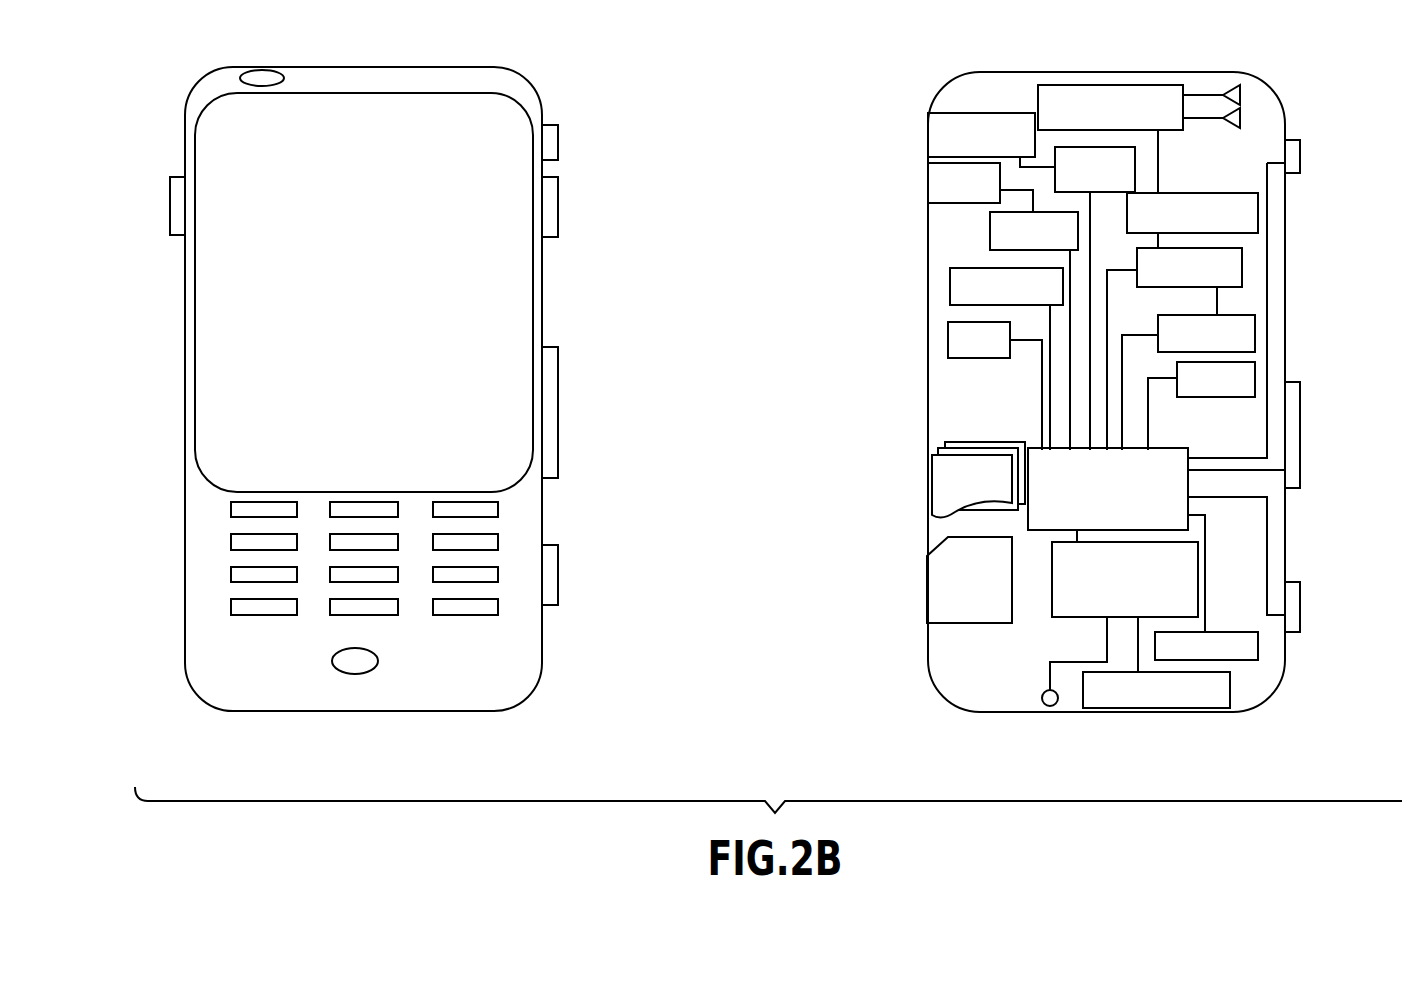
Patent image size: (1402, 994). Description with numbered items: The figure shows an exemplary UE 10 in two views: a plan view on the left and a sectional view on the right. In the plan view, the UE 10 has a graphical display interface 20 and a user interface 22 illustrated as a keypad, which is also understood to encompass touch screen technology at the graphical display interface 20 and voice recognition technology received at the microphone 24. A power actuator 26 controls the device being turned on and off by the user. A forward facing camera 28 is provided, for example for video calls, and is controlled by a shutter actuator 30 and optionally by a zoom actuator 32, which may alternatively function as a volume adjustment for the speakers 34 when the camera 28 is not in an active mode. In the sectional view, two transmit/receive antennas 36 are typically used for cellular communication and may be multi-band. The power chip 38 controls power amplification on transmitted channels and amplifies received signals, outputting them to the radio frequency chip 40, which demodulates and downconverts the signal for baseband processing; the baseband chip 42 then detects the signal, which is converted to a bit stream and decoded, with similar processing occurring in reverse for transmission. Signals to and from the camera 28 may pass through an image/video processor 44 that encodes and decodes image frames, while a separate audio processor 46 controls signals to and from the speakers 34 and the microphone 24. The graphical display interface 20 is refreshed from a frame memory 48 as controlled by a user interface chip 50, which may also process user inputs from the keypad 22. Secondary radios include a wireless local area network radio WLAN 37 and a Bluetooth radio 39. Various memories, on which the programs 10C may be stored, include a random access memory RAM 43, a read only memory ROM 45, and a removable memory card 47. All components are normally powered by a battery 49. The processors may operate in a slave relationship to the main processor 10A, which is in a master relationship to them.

The UE 10 is at (540, 755).
The main processor 10A is at (1038, 450).
The programs 10C is at (938, 492).
The graphical display interface 20 is at (220, 307).
The user interface 22 is at (217, 622).
The microphone 24 is at (360, 663).
The power actuator 26 is at (552, 138).
The camera 28 is at (267, 73).
The shutter actuator 30 is at (550, 568).
The zoom actuator 32 is at (550, 392).
The speaker 34 is at (182, 177).
The transmit/receive antennas 36 is at (1238, 80).
The wireless local area network radio WLAN 37 is at (955, 300).
The power chip 38 is at (1100, 92).
The Bluetooth radio 39 is at (950, 340).
The radio frequency (RF) chip 40 is at (1250, 223).
The baseband (BB) chip 42 is at (1237, 273).
The random access memory RAM 43 is at (1250, 337).
The image/video processor 44 is at (1128, 185).
The read only memory ROM 45 is at (1248, 377).
The audio processor 46 is at (990, 237).
The memory card 47 is at (933, 558).
The frame memory 48 is at (1155, 710).
The battery 49 is at (1253, 657).
The user interface chip 50 is at (1077, 617).